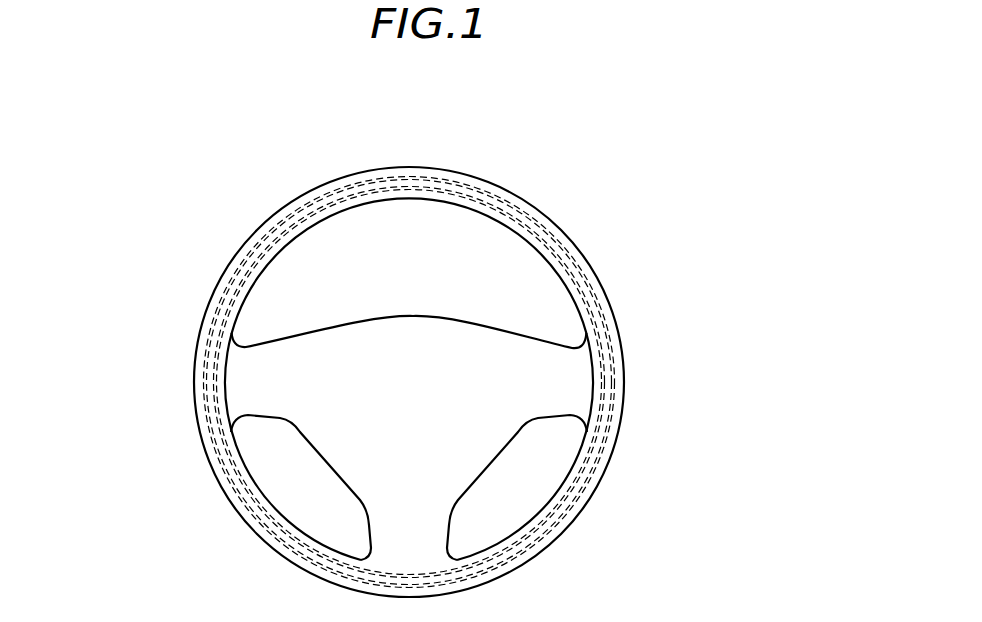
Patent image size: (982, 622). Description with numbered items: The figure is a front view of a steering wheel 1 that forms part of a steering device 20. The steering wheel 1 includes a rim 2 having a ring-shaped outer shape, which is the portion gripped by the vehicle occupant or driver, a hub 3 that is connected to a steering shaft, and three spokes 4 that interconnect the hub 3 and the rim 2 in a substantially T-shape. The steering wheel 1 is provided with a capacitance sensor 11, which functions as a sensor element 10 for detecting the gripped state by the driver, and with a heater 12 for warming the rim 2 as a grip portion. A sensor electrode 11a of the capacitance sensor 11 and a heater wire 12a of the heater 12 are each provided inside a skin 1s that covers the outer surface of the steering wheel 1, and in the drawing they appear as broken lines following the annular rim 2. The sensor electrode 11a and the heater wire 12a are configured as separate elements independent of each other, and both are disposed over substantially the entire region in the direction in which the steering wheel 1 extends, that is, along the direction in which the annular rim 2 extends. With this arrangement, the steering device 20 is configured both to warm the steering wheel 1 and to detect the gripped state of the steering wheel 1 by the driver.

The steering wheel 1 is at (334, 382).
The steering device 20 is at (409, 382).
The skin 1s is at (535, 213).
The rim 2 is at (585, 250).
The hub 3 is at (415, 315).
The spokes 4 is at (265, 417).
The capacitance sensor 11 is at (507, 382).
The sensor electrode 11a is at (409, 382).
The sensor element 10 is at (612, 312).
The heater 12 is at (491, 382).
The heater wire 12a is at (620, 383).